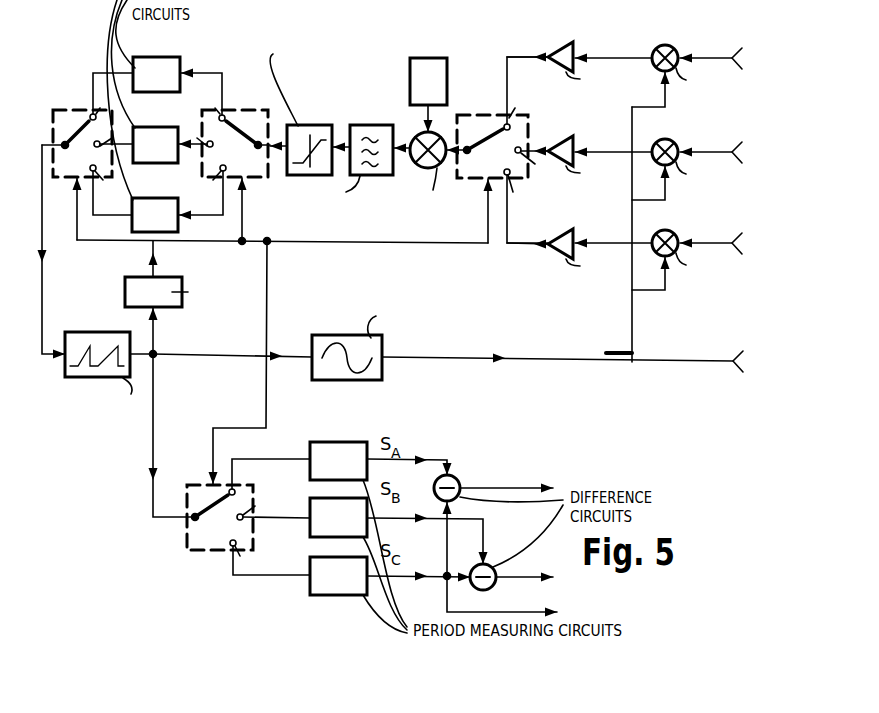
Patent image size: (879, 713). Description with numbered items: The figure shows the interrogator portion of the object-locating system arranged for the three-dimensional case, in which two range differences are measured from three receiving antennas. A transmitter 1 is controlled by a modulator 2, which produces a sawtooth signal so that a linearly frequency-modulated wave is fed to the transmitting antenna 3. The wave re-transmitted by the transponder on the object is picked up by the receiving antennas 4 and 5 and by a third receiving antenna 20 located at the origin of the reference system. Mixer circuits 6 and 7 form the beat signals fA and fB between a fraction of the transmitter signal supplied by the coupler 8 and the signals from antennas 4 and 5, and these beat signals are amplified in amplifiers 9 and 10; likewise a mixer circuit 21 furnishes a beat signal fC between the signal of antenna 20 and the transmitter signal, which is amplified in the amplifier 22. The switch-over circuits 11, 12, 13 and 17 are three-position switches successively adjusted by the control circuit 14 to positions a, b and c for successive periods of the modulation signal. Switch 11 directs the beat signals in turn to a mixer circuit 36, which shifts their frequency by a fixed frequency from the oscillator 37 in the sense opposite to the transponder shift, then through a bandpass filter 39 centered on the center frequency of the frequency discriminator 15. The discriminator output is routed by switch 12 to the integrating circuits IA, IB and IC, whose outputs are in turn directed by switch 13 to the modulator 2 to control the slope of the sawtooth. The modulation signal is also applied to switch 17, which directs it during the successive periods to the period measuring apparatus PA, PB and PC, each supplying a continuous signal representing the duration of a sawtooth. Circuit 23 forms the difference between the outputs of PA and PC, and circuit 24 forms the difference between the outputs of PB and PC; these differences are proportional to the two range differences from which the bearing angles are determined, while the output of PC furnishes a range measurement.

The transmitter 1 is at (342, 333).
The modulator 2 is at (85, 338).
The transmitting antenna 3 is at (733, 358).
The receiving antenna 4 is at (732, 55).
The receiving antenna 5 is at (732, 149).
The mixer circuit 6 is at (667, 45).
The mixer circuit 7 is at (667, 139).
The coupler 8 is at (612, 351).
The amplifier 9 is at (562, 43).
The amplifier 10 is at (562, 137).
The switch 11 is at (483, 115).
The switch 12 is at (245, 115).
The switch 13 is at (68, 117).
The control circuit 14 is at (125, 281).
The frequency discriminator 15 is at (300, 123).
The switch 17 is at (193, 552).
The receiving antenna 20 is at (732, 240).
The mixer circuit 21 is at (667, 230).
The amplifier 22 is at (562, 230).
The difference circuit 23 is at (457, 478).
The difference circuit 24 is at (492, 563).
The mixer circuit 36 is at (436, 177).
The oscillator 37 is at (432, 58).
The bandpass filter 39 is at (368, 124).
The integrating circuit IA is at (143, 72).
The integrating circuit IB is at (147, 138).
The integrating circuit IC is at (148, 208).
The period measuring circuit PA is at (310, 452).
The period measuring circuit PB is at (312, 508).
The period measuring circuit PC is at (320, 569).